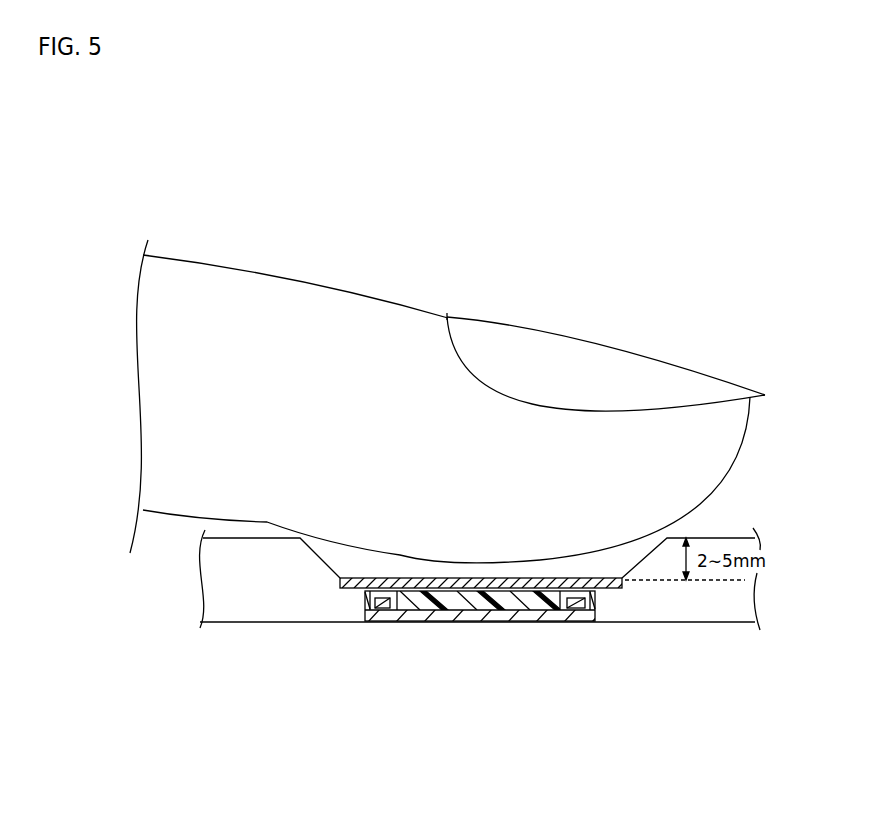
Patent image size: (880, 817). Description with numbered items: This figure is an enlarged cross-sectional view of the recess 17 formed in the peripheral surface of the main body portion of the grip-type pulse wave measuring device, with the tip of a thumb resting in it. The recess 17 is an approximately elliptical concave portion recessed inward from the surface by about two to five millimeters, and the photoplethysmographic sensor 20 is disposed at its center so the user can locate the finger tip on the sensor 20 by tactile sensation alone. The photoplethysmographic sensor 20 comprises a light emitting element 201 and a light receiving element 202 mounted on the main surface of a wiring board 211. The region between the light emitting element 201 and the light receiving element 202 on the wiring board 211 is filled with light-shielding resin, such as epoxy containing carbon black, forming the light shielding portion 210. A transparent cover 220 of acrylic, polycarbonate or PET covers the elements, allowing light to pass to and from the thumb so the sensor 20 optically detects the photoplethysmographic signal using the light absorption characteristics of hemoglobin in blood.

The recess 17 is at (333, 565).
The photoplethysmographic sensor 20 is at (494, 656).
The light emitting element 201 is at (383, 607).
The light receiving element 202 is at (577, 607).
The light shielding portion 210 is at (433, 605).
The wiring board 211 is at (468, 617).
The transparent cover 220 is at (533, 607).